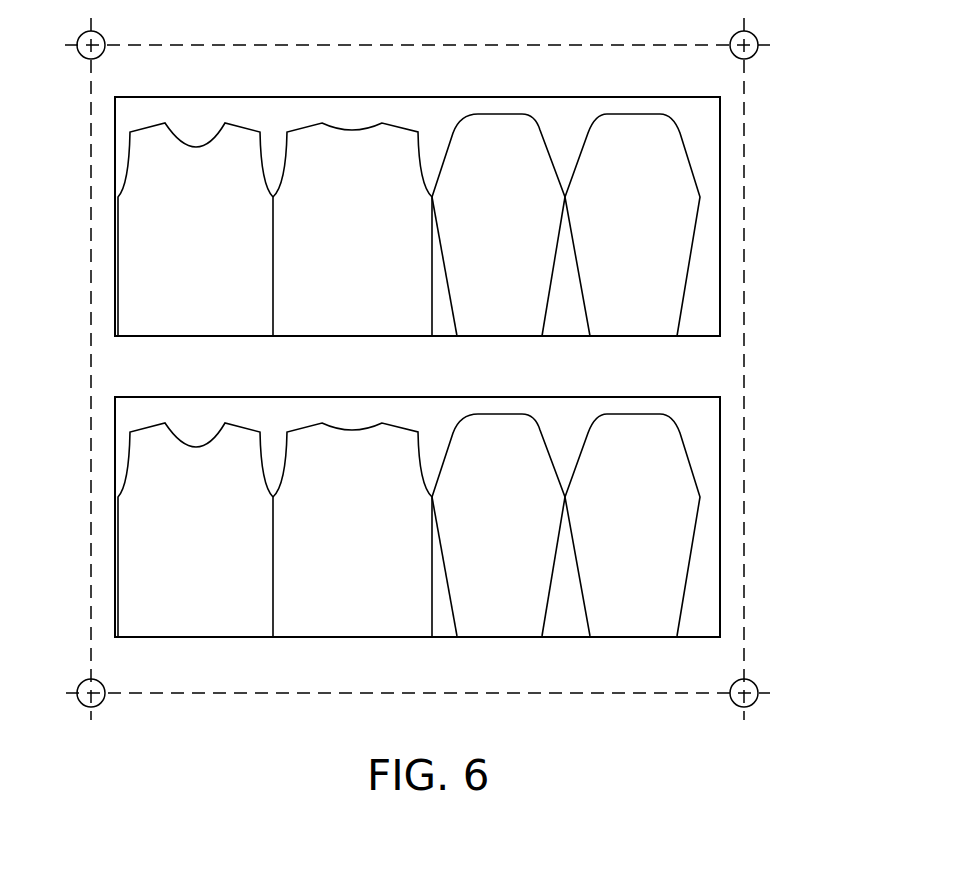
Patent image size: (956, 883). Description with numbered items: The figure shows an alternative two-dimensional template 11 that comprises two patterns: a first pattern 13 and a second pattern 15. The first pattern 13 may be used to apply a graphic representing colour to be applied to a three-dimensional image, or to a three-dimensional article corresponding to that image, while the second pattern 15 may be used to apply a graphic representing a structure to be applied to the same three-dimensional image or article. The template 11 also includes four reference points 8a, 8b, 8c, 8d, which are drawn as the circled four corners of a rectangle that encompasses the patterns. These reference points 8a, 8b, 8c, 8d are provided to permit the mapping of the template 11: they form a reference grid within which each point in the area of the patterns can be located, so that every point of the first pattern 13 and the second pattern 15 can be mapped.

The reference point 8a is at (84, 36).
The reference point 8b is at (751, 35).
The reference point 8c is at (752, 684).
The reference point 8d is at (84, 684).
The two-dimensional template 11 is at (782, 123).
The first pattern 13 is at (565, 337).
The second pattern 15 is at (565, 638).